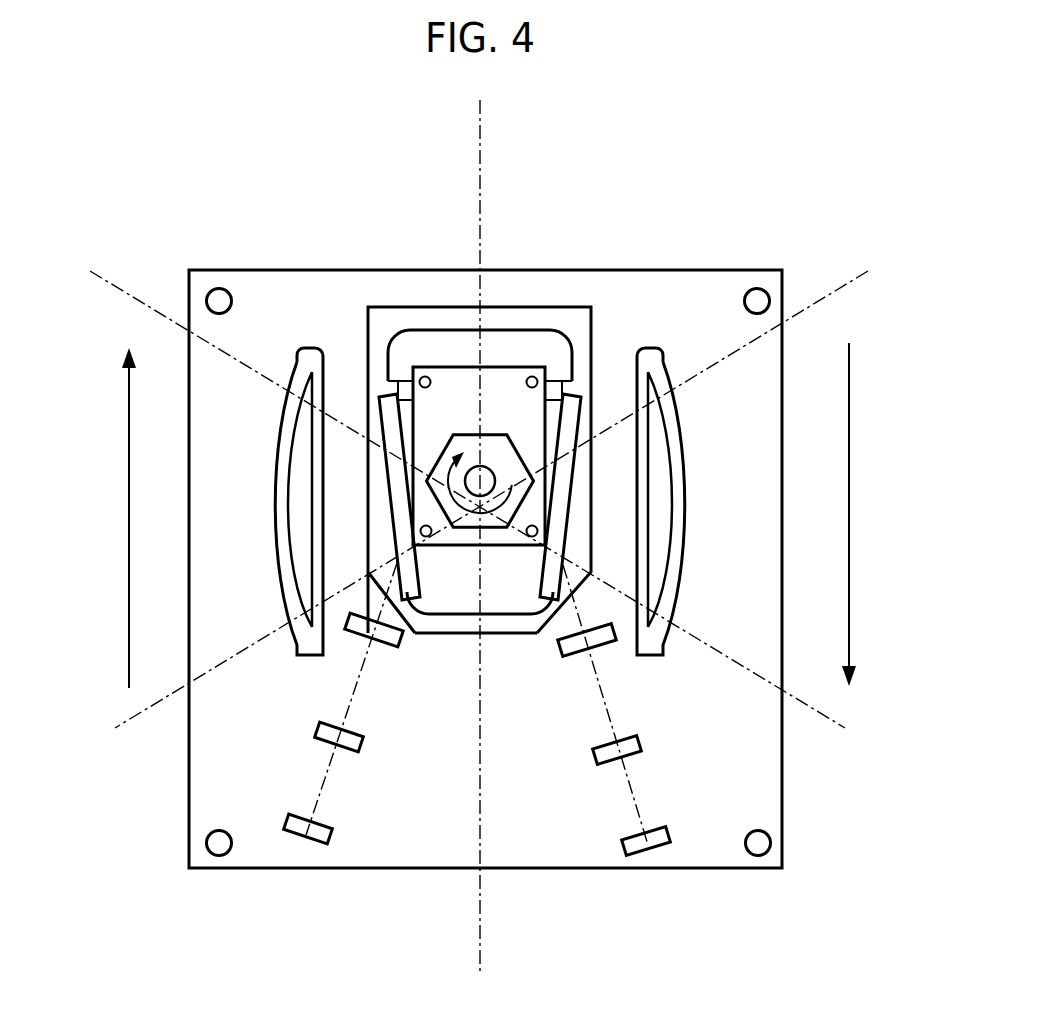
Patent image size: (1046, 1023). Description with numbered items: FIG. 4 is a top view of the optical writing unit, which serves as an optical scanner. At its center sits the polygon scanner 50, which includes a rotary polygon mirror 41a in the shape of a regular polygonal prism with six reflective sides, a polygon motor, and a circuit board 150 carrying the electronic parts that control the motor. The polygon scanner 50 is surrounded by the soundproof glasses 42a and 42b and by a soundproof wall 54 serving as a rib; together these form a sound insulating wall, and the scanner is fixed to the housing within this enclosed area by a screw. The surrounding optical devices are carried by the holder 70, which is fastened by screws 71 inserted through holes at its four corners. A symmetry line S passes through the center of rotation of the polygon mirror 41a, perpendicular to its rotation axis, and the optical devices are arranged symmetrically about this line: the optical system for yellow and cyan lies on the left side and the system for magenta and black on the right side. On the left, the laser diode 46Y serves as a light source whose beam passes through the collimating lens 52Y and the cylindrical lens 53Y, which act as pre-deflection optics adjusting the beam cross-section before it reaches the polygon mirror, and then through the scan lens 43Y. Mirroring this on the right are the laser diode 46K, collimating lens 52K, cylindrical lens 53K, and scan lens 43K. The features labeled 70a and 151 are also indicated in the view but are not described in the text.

The symmetry line S is at (484, 131).
The holder 70 is at (189, 740).
The base plate edge portion 70a is at (446, 634).
The screw 71 is at (213, 289).
The circuit board 150 is at (506, 348).
The soundproof wall 54 is at (450, 330).
The polygon scanner 50 is at (525, 367).
The fixing hole 151 is at (425, 376).
The rotary polygon mirror 41a is at (498, 528).
The soundproof glass 42a is at (388, 397).
The soundproof glass 42b is at (572, 397).
The scan lens 43Y is at (303, 354).
The scan lens 43K is at (657, 354).
The cylindrical lens 53Y is at (386, 648).
The cylindrical lens 53K is at (603, 655).
The collimating lens 52Y is at (349, 753).
The collimating lens 52K is at (630, 758).
The laser diode 46Y is at (307, 841).
The laser diode 46K is at (656, 851).